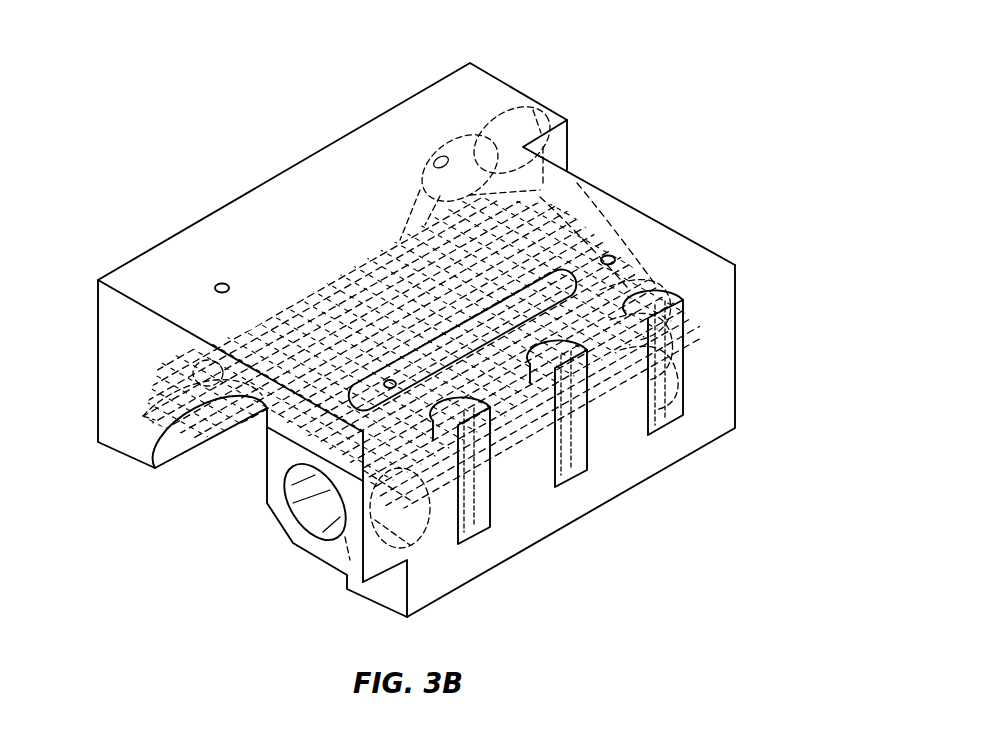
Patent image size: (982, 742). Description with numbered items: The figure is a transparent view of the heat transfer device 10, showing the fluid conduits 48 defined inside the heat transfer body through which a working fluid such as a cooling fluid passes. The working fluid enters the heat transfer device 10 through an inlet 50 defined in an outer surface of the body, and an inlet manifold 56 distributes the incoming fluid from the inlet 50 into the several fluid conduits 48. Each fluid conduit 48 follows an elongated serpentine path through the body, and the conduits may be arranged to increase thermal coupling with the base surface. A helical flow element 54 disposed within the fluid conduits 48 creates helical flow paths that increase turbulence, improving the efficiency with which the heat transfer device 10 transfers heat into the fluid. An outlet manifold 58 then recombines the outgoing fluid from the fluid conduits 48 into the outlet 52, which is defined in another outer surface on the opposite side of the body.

The heat transfer device 10 is at (688, 108).
The fluid conduits 48 is at (380, 288).
The inlet 50 is at (313, 535).
The outlet 52 is at (520, 110).
The helical flow element 54 is at (622, 430).
The inlet manifold 56 is at (265, 413).
The outlet manifold 58 is at (553, 190).